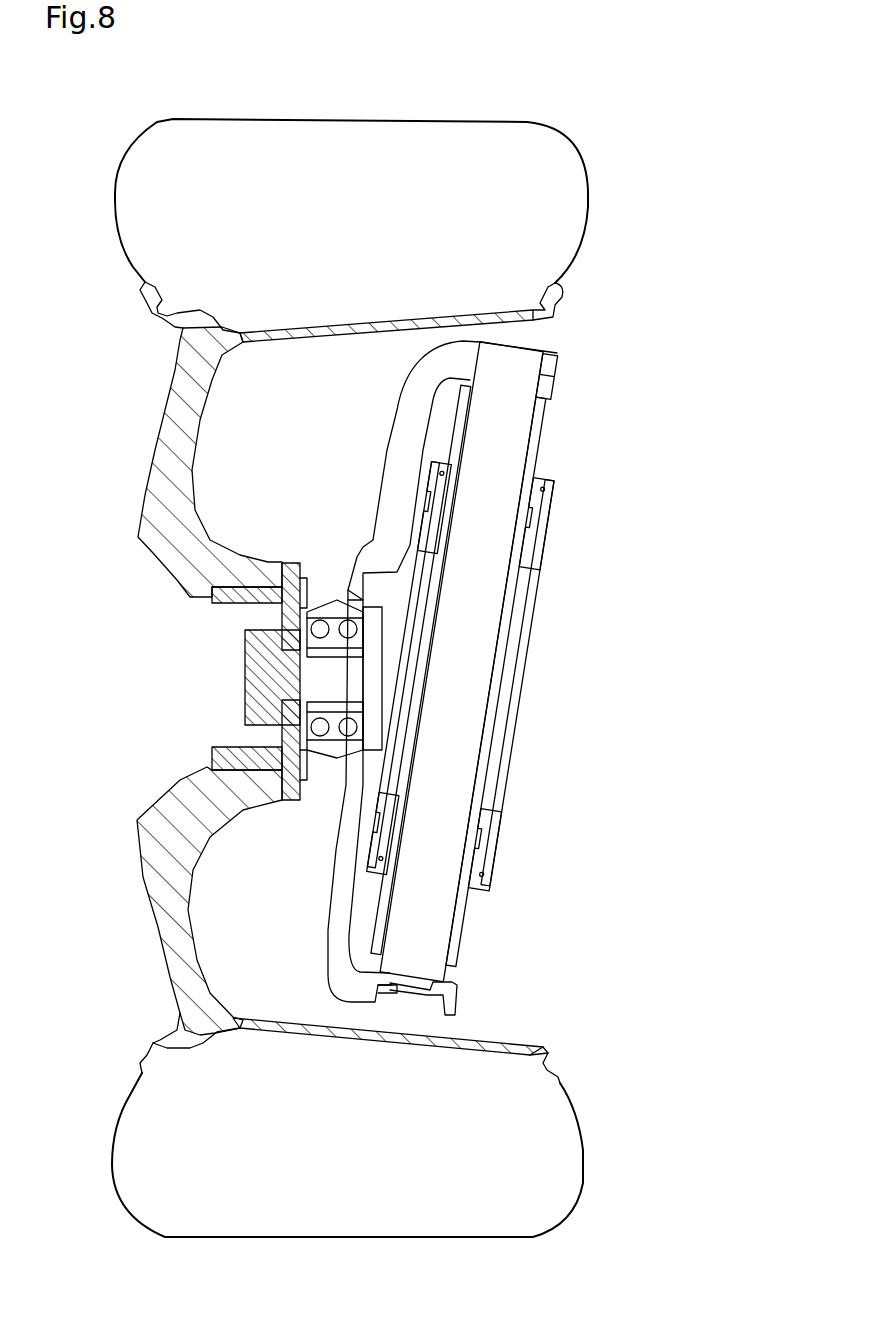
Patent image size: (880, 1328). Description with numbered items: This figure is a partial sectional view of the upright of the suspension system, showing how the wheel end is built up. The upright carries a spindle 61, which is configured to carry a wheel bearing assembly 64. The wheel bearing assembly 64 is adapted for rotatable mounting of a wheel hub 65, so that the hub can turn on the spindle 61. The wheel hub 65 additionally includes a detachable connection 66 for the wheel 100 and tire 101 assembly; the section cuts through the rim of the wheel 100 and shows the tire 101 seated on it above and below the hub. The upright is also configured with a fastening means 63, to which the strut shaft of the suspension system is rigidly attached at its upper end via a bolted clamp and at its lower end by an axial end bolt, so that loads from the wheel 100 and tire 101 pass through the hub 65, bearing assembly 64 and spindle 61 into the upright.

The wheel 100 is at (180, 372).
The tire 101 is at (557, 198).
The spindle 61 is at (343, 593).
The fastening means 63 is at (552, 373).
The wheel bearing assembly 64 is at (250, 645).
The wheel hub 65 is at (282, 745).
The detachable connection 66 is at (222, 593).